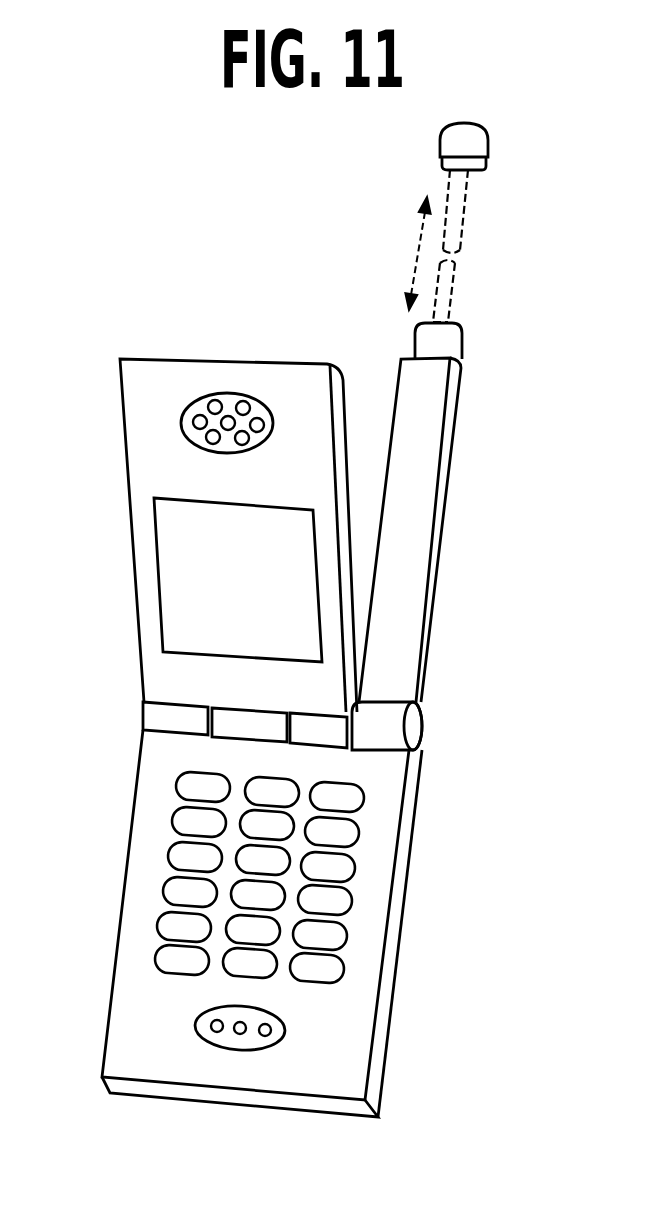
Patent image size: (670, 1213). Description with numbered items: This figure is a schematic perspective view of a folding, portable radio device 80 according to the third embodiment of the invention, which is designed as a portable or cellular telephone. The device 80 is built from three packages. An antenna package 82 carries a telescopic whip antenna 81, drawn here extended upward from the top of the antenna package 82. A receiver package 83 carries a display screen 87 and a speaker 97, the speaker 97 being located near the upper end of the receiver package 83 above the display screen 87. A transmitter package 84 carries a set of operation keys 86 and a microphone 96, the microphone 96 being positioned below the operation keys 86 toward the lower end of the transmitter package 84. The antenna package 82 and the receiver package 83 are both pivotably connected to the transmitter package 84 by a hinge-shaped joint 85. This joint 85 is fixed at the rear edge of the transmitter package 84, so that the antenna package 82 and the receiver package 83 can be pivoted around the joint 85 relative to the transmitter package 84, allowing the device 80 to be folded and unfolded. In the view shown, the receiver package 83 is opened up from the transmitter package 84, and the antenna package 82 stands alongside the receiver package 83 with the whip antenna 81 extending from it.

The device 80 is at (128, 203).
The telescopic whip antenna 81 is at (487, 151).
The antenna package 82 is at (440, 537).
The receiver package 83 is at (137, 456).
The transmitter package 84 is at (387, 1013).
The hinge-shaped joint 85 is at (425, 733).
The operation keys 86 is at (347, 911).
The display screen 87 is at (167, 580).
The microphone 96 is at (195, 1028).
The speaker 97 is at (232, 393).